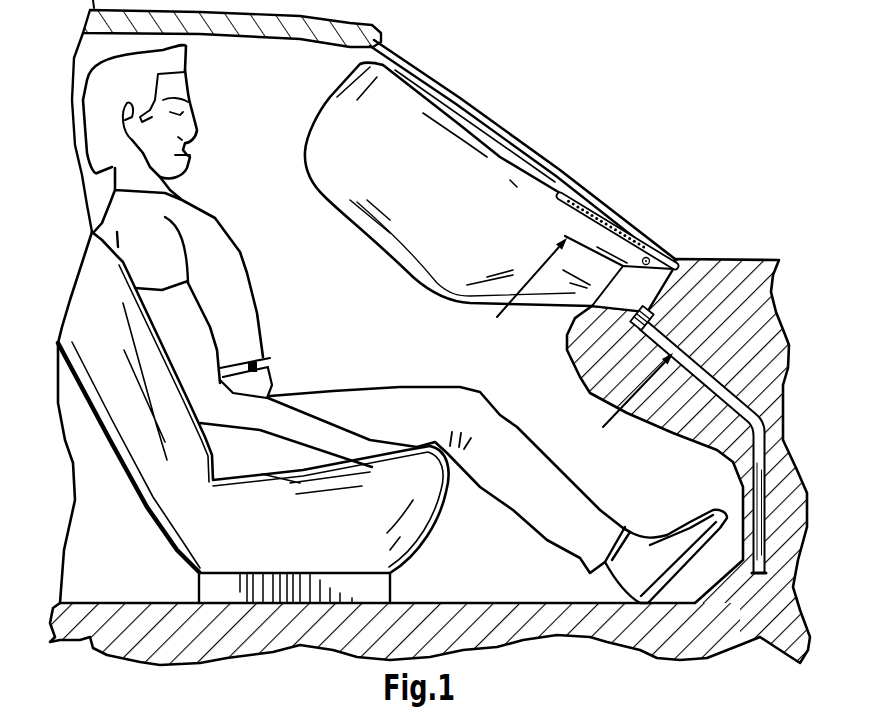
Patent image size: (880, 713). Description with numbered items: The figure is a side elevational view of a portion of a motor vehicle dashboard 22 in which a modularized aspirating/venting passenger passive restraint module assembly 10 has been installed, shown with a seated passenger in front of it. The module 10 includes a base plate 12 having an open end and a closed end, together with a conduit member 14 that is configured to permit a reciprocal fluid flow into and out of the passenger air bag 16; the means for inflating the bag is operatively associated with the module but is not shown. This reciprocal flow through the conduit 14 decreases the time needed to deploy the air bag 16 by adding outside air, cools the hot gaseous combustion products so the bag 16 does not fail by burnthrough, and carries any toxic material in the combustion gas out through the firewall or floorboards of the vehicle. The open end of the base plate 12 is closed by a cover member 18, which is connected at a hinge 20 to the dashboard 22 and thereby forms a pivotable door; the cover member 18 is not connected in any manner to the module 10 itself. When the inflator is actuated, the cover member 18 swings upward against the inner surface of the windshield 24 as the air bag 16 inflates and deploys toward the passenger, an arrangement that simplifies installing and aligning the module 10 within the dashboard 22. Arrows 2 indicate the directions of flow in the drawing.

The direction arrows 2 is at (580, 343).
The aspirating/venting passenger passive restraint module assembly 10 is at (676, 291).
The base plate 12 is at (593, 308).
The conduit member 14 is at (724, 380).
The air bag 16 is at (397, 141).
The cover member 18 is at (567, 208).
The hinge 20 is at (648, 256).
The vehicle dashboard 22 is at (576, 383).
The windshield 24 is at (566, 198).